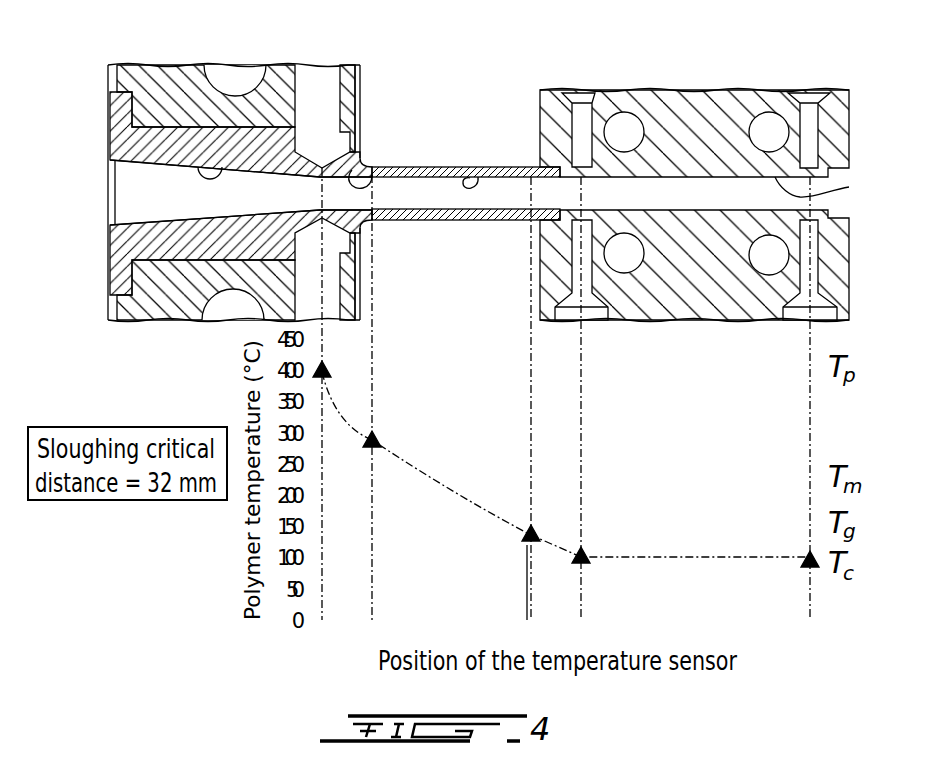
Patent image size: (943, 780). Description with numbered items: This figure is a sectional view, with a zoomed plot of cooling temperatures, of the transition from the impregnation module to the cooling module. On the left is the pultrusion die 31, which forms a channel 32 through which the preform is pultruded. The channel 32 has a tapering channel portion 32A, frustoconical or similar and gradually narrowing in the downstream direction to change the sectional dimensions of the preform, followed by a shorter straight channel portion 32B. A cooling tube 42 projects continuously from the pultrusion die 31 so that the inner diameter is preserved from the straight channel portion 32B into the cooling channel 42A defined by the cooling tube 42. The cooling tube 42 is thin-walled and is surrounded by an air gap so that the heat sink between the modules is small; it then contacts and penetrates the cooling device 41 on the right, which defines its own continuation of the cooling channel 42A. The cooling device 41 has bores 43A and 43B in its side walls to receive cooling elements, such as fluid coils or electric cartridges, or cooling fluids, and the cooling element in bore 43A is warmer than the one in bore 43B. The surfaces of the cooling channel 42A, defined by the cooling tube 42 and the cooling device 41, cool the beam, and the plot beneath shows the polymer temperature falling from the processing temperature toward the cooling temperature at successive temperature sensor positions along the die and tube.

The pultrusion die 31 is at (122, 127).
The channel 32 is at (131, 200).
The tapering channel portion 32A is at (203, 165).
The straight channel portion 32B is at (372, 176).
The cooling device 41 is at (833, 133).
The cooling tube 42 is at (453, 221).
The cooling channel 42A is at (478, 167).
The bore 43A is at (638, 114).
The bore 43B is at (778, 114).